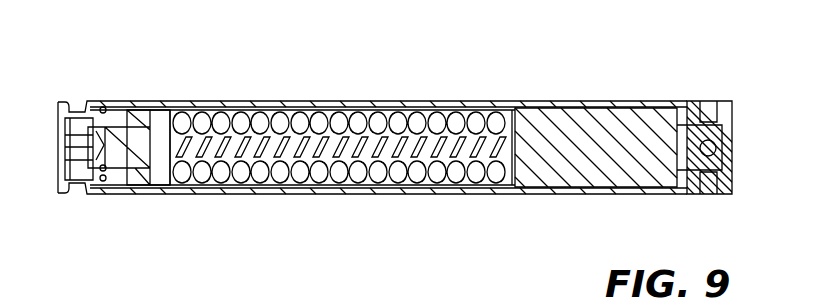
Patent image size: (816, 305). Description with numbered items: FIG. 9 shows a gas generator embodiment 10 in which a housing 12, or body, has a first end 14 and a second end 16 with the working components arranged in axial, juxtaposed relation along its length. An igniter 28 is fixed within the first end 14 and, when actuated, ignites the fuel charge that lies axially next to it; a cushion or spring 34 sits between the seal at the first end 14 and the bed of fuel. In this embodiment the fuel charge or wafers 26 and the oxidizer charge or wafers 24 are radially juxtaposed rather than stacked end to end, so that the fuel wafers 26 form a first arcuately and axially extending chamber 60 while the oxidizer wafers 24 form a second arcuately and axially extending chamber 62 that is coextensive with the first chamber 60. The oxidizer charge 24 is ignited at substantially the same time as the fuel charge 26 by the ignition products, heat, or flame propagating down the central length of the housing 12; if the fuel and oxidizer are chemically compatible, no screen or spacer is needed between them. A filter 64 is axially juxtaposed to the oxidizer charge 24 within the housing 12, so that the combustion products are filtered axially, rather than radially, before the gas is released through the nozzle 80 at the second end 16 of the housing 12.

The battery assembly 10 is at (40, 89).
The housing 12 is at (163, 99).
The first end 14 is at (34, 158).
The second end 16 is at (736, 118).
The oxidizer charge 24 is at (321, 113).
The fuel charge 26 is at (202, 223).
The igniter 28 is at (104, 153).
The spring 34 is at (152, 178).
The first arcuately and axially extending chamber 60 is at (341, 149).
The second arcuately and axially extending chamber 62 is at (509, 99).
The filter 64 is at (599, 139).
The nozzle 80 is at (706, 158).